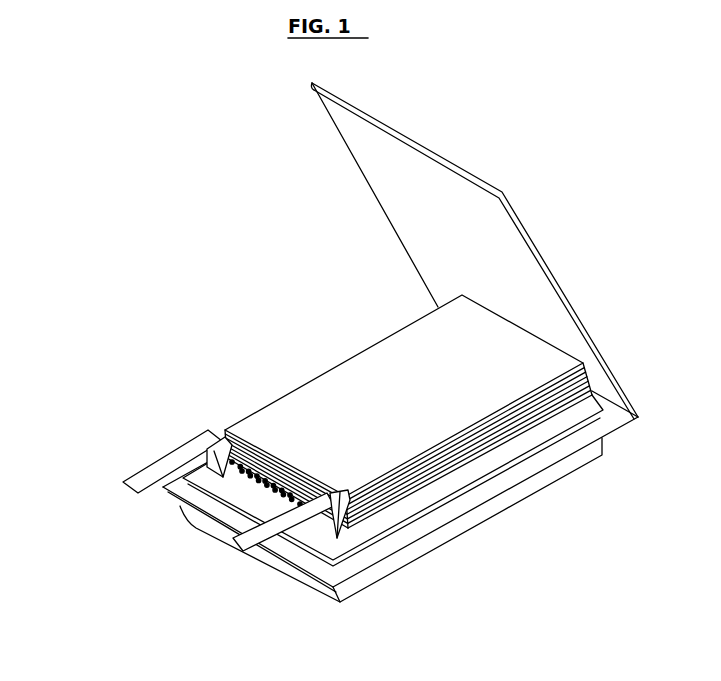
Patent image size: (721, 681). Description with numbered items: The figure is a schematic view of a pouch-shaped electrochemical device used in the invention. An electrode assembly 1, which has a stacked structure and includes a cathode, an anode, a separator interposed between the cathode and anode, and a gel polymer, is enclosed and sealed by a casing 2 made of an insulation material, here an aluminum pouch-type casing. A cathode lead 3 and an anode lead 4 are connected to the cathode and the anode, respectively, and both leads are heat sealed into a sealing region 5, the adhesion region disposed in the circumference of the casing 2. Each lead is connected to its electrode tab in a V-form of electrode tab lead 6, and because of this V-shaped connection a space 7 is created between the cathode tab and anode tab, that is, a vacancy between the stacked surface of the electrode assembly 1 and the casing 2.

The electrode assembly 1 is at (311, 403).
The casing 2 is at (463, 238).
The cathode lead 3 is at (154, 462).
The anode lead 4 is at (297, 529).
The sealing region 5 is at (211, 508).
The V-form of electrode tab lead 6 is at (355, 537).
The space between cathode tab and anode tab 7 is at (248, 507).